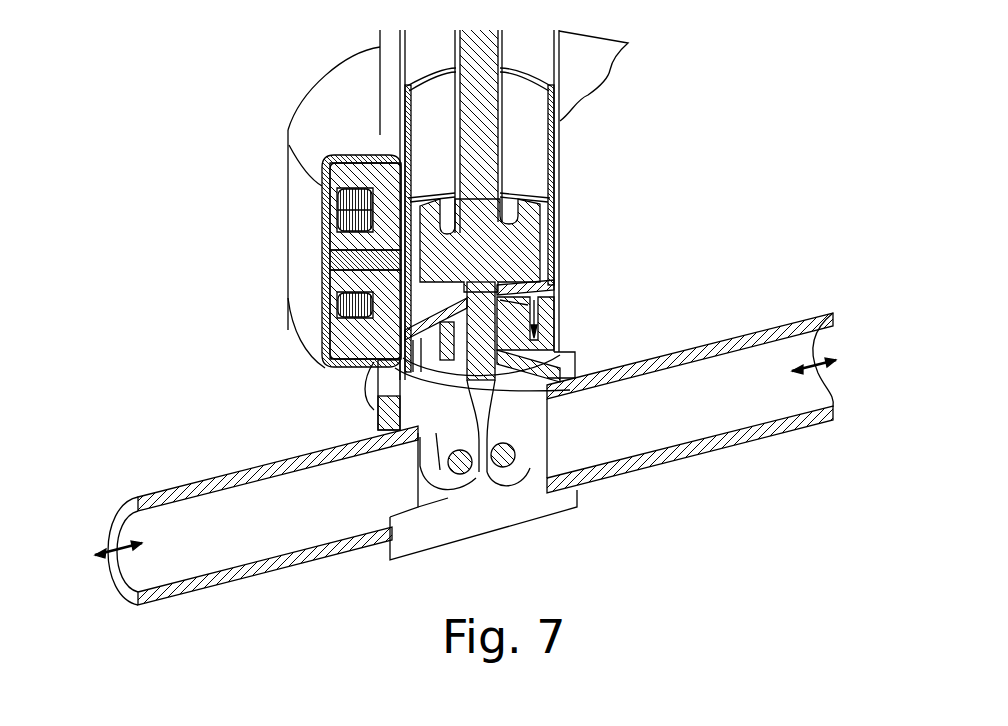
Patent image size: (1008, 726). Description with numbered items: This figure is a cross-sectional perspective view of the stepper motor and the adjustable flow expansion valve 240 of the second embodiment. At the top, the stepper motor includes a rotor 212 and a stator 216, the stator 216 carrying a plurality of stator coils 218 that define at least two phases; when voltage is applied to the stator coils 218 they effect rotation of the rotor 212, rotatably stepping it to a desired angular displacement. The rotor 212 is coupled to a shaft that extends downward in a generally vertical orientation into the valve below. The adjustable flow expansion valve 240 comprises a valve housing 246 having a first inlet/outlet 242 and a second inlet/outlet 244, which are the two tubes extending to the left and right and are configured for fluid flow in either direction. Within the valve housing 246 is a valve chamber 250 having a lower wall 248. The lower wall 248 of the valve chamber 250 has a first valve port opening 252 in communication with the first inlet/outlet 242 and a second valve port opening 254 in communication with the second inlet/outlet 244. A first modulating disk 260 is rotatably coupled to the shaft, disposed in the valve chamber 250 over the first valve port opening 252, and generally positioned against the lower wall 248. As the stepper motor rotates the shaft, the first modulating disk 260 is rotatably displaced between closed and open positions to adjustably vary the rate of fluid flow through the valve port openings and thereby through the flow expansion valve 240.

The rotor 212 is at (557, 140).
The stator 216 is at (300, 318).
The stator coils 218 is at (334, 206).
The adjustable flow expansion valve 240 is at (595, 597).
The first inlet/outlet 242 is at (117, 565).
The second inlet/outlet 244 is at (829, 360).
The valve housing 246 is at (492, 517).
The lower wall 248 is at (543, 297).
The valve chamber 250 is at (537, 283).
The first valve port opening 252 is at (376, 396).
The second valve port opening 254 is at (524, 368).
The first modulating disk 260 is at (548, 324).